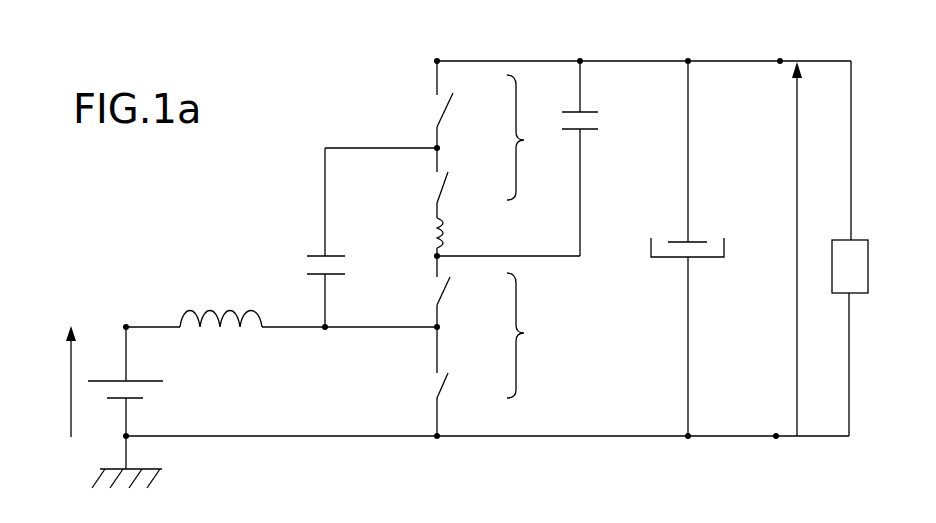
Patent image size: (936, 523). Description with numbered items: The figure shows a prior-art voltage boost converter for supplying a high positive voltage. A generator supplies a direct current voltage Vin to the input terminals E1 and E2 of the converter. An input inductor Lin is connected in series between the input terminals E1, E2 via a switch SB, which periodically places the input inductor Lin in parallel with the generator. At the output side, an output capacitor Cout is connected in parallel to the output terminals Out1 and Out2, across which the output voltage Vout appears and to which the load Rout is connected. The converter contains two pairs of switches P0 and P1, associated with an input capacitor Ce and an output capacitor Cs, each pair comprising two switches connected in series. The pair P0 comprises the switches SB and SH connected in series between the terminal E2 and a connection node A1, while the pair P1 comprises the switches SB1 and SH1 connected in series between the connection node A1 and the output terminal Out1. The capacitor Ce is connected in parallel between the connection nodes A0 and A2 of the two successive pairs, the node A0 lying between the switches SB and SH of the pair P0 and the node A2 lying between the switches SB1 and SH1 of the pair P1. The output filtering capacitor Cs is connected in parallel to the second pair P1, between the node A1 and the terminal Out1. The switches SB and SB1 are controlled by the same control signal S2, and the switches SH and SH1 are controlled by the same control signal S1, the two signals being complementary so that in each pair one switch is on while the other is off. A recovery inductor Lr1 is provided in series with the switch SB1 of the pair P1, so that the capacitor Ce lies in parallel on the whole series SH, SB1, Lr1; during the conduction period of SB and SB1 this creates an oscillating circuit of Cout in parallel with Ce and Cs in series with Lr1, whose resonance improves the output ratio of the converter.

The input terminal E1 is at (141, 314).
The input terminal E2 is at (124, 443).
The direct current voltage Vin is at (93, 381).
The input inductor Lin is at (216, 303).
The input capacitor Ce is at (352, 237).
The output filtering capacitor Cs is at (535, 158).
The output capacitor Cout is at (707, 248).
The output terminal Out1 is at (792, 47).
The output terminal Out2 is at (770, 454).
The output voltage Vout is at (766, 249).
The output load Rout is at (878, 248).
The switch SH1 is at (471, 107).
The switch SB1 is at (470, 186).
The switch SH is at (461, 284).
The switch SB is at (463, 388).
The recovery inductor Lr1 is at (447, 235).
The connection node A2 is at (440, 148).
The connection node A1 is at (434, 256).
The connection node A0 is at (440, 327).
The first control signal S1 is at (428, 112).
The second control signal S2 is at (428, 183).
The pair of switches P1 is at (532, 137).
The pair of switches P0 is at (532, 335).